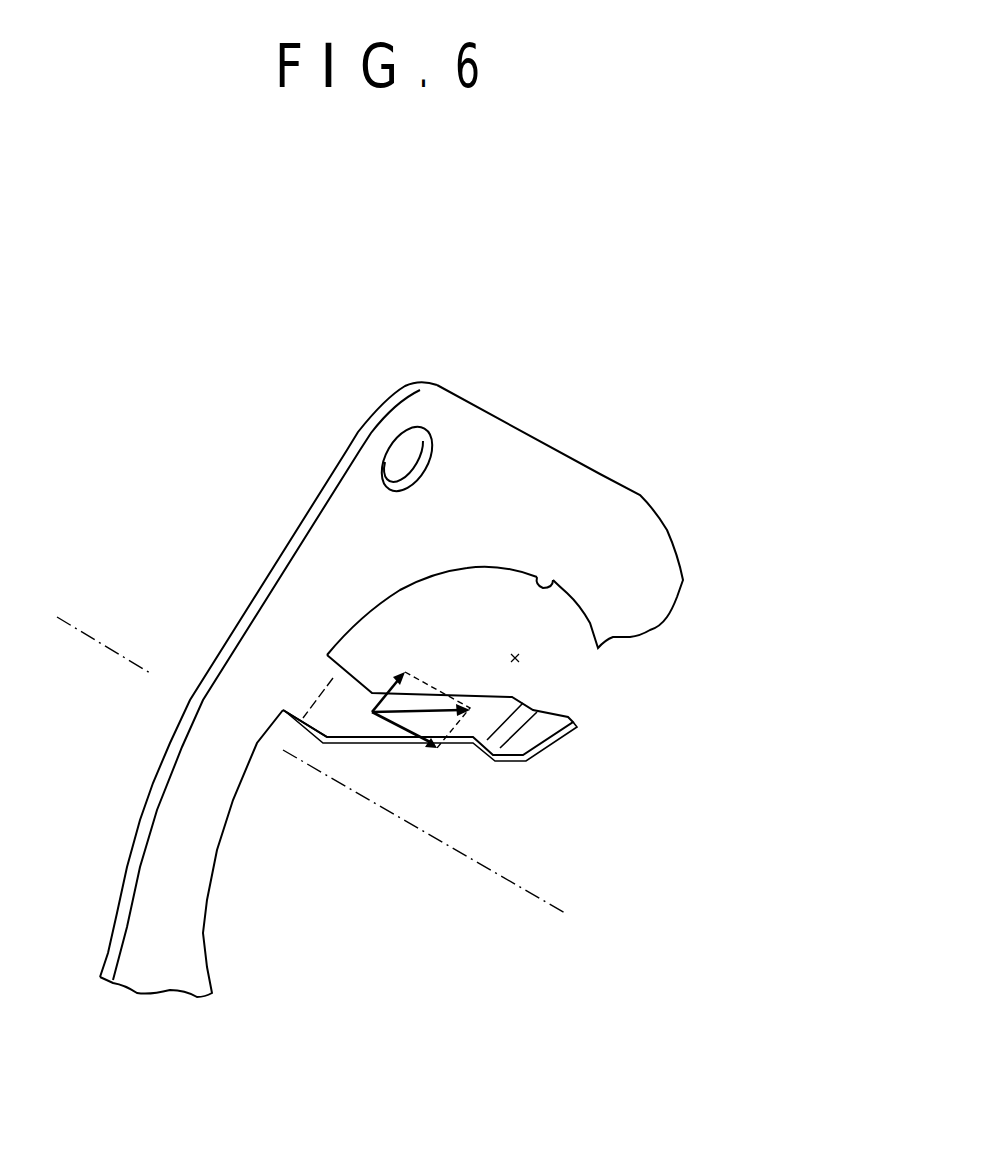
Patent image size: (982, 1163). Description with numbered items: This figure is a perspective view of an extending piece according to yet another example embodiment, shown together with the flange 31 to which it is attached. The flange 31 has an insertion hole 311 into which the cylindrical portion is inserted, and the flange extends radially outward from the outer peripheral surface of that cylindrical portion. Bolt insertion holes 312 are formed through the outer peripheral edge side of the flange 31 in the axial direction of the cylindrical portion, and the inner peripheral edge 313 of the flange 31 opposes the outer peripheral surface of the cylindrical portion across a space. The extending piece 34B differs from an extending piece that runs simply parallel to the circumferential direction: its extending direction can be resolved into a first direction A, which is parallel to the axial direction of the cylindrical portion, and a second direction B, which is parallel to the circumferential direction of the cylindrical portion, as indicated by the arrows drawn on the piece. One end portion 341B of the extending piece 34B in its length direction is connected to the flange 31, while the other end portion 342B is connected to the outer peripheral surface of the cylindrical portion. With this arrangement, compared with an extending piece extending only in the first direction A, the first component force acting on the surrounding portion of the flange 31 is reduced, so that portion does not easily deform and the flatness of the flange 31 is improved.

The flange 31 is at (540, 452).
The insertion hole 311 is at (520, 657).
The bolt insertion hole 312 is at (386, 451).
The inner peripheral edge 313 is at (543, 583).
The extending piece 34B is at (360, 747).
The one end portion 341B is at (320, 727).
The other end portion 342B is at (550, 737).
The first direction A is at (390, 730).
The second direction B is at (378, 697).